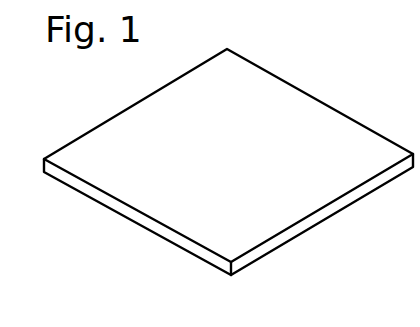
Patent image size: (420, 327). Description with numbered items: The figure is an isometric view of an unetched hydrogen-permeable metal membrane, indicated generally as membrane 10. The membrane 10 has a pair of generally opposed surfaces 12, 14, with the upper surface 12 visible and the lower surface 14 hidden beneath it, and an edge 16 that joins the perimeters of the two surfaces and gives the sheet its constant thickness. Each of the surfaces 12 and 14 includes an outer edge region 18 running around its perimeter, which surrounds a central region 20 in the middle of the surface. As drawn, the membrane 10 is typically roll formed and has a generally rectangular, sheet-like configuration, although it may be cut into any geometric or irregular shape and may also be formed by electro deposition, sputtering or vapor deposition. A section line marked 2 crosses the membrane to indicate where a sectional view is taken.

The hydrogen-permeable metal membrane 10 is at (306, 44).
The surface 12 is at (201, 182).
The surface 14 is at (108, 215).
The edge 16 is at (167, 237).
The outer edge region 18 is at (325, 115).
The central region 20 is at (282, 173).
The section line 2- 2 is at (97, 97).